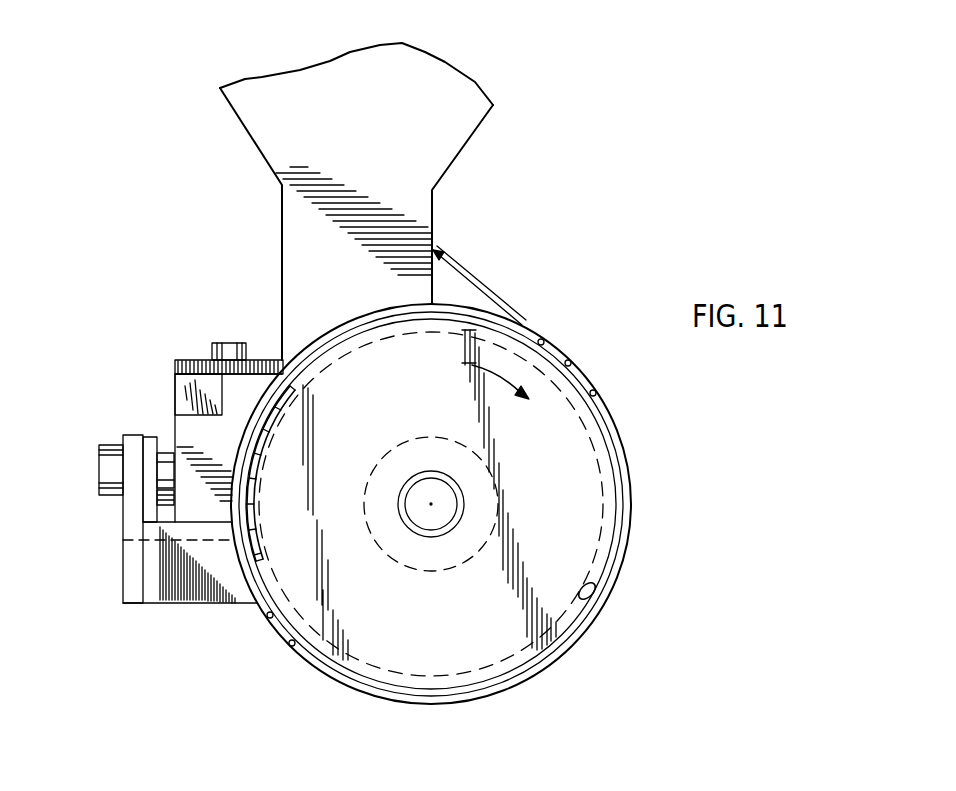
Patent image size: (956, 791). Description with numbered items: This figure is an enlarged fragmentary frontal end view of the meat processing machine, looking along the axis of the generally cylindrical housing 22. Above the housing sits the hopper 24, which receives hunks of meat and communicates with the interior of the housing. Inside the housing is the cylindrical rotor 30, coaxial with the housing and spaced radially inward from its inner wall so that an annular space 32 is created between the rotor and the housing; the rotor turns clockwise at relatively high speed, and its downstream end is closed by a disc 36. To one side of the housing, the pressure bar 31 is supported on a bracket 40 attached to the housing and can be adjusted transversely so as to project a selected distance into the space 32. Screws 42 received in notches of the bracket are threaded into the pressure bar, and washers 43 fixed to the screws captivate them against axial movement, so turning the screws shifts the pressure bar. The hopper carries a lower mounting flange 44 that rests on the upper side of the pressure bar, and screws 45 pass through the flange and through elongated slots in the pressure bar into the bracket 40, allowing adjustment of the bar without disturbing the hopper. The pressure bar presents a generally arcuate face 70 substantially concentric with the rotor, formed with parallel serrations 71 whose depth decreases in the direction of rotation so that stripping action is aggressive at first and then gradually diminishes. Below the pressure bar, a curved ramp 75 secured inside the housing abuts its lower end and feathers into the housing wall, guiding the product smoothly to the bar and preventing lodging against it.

The housing 22 is at (620, 450).
The hopper 24 is at (433, 145).
The rotor 30 is at (320, 627).
The pressure bar 31 is at (201, 428).
The annular space 32 is at (595, 581).
The disc 36 is at (423, 648).
The bracket 40 is at (217, 600).
The screws 42 is at (100, 475).
The washers 43 is at (172, 528).
The mounting flange 44 is at (263, 372).
The screws 45 is at (228, 350).
The arcuate face 70 is at (272, 423).
The serrations 71 is at (248, 458).
The curved ramp 75 is at (246, 535).